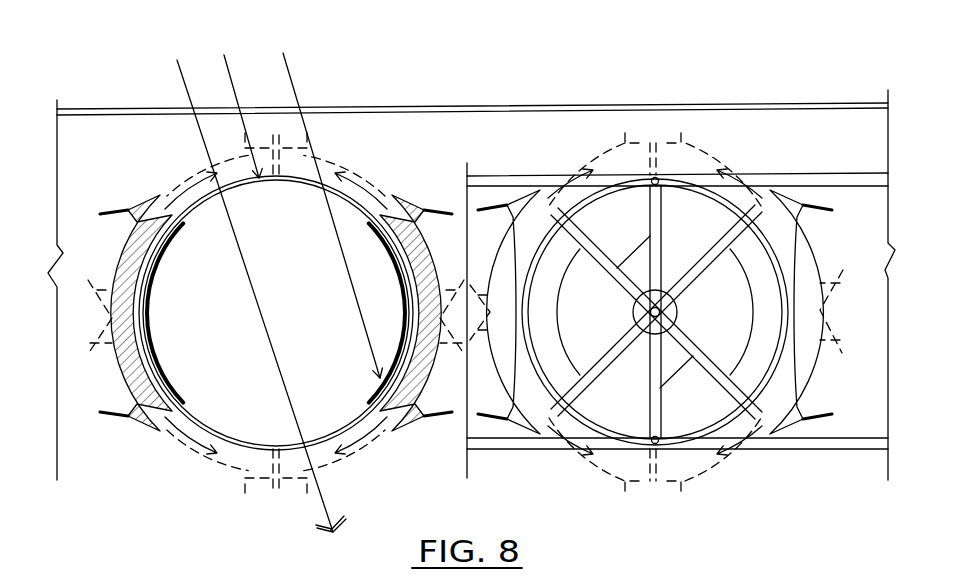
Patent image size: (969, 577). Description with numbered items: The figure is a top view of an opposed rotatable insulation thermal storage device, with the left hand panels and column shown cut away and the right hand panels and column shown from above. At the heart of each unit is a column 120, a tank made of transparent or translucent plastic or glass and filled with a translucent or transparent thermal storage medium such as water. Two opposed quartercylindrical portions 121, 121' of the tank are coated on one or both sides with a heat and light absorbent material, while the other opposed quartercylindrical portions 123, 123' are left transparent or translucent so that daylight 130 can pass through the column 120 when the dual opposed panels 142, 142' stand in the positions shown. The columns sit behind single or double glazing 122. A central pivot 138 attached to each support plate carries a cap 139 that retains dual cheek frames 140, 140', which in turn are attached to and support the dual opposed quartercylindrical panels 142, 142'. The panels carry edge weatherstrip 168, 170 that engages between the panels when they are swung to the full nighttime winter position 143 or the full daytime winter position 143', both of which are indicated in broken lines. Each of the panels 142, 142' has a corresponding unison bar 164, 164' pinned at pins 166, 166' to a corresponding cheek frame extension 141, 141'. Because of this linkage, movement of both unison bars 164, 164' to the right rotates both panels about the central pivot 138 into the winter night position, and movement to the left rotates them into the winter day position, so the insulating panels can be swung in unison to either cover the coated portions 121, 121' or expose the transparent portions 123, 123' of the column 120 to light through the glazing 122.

The glazing 122 is at (464, 106).
The daylight 130 is at (181, 72).
The full nighttime winter position 143 is at (253, 242).
The transparent quartercylindrical portion 123 is at (276, 313).
The column 120 is at (292, 259).
The coated quartercylindrical portion 121' is at (176, 312).
The coated quartercylindrical portion 121 is at (361, 312).
The opposed quartercylindrical panel 142' is at (306, 312).
The opposed quartercylindrical panel 142 is at (606, 312).
The transparent quartercylindrical portion 123' is at (276, 313).
The edge weatherstrip 168 is at (116, 414).
The edge weatherstrip 170 is at (430, 422).
The full daytime winter position 143' is at (307, 398).
The pin 166' is at (687, 152).
The unison bar 164' is at (677, 164).
The cheek frame extension 141' is at (668, 236).
The cheek frame 140' is at (565, 312).
The cap 139 is at (650, 312).
The central pivot 138 is at (680, 312).
The cheek frame 140 is at (751, 312).
The cheek frame extension 141 is at (647, 383).
The pin 166 is at (646, 480).
The unison bar 164 is at (677, 467).